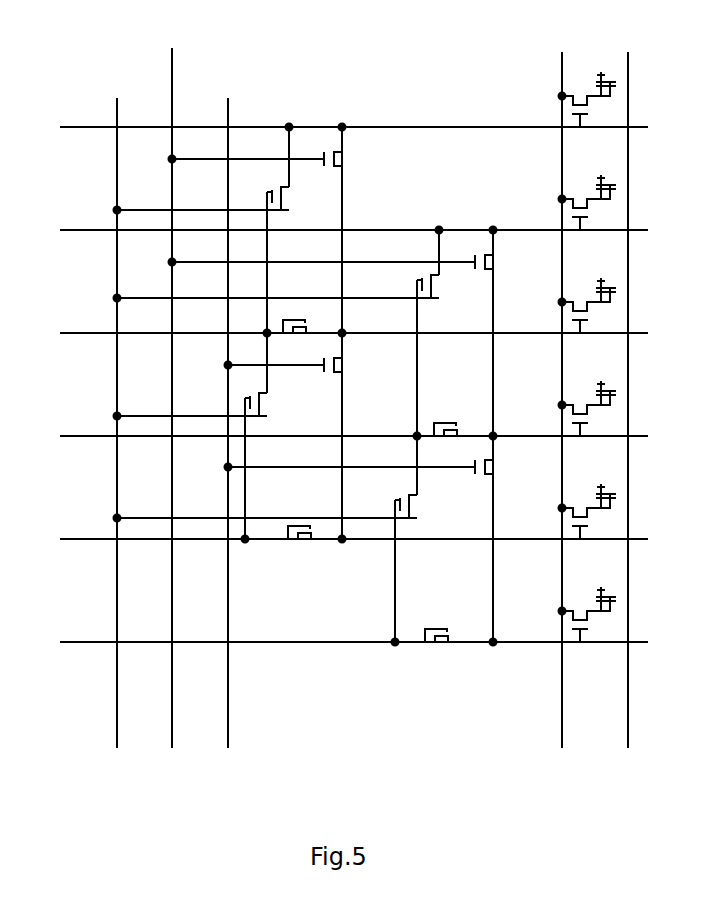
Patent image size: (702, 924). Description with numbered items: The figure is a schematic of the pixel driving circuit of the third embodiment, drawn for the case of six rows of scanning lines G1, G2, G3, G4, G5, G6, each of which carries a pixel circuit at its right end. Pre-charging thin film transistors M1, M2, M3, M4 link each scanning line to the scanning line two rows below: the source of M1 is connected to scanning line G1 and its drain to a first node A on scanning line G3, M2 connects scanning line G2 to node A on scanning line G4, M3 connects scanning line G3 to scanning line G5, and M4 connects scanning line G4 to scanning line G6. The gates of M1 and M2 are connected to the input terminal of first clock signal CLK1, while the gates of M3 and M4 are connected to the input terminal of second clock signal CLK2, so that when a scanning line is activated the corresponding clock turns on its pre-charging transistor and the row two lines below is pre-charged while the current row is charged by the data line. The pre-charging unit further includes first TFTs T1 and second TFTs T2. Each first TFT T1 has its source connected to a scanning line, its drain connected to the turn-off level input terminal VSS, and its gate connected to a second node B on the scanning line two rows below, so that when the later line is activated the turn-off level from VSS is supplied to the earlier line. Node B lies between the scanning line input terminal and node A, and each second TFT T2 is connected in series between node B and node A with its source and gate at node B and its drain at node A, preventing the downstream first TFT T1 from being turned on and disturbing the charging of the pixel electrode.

The first row of scanning line G1 is at (334, 127).
The second row of scanning line G2 is at (334, 230).
The third row of scanning line G3 is at (334, 333).
The fourth row of scanning line G4 is at (334, 436).
The fifth row of scanning line G5 is at (334, 539).
The sixth row of scanning line G6 is at (334, 642).
The input terminal of first clock signal CLK1 is at (175, 379).
The input terminal of second clock signal CLK2 is at (226, 407).
The turn-off level input terminal VSS is at (113, 407).
The pre-charging TFT M1 is at (278, 332).
The pre-charging TFT M2 is at (351, 435).
The pre-charging TFT M3 is at (307, 370).
The pre-charging TFT M4 is at (381, 472).
The first TFT T1 is at (296, 383).
The second TFT T2 is at (377, 481).
The first node A is at (431, 494).
The second node B is at (331, 507).